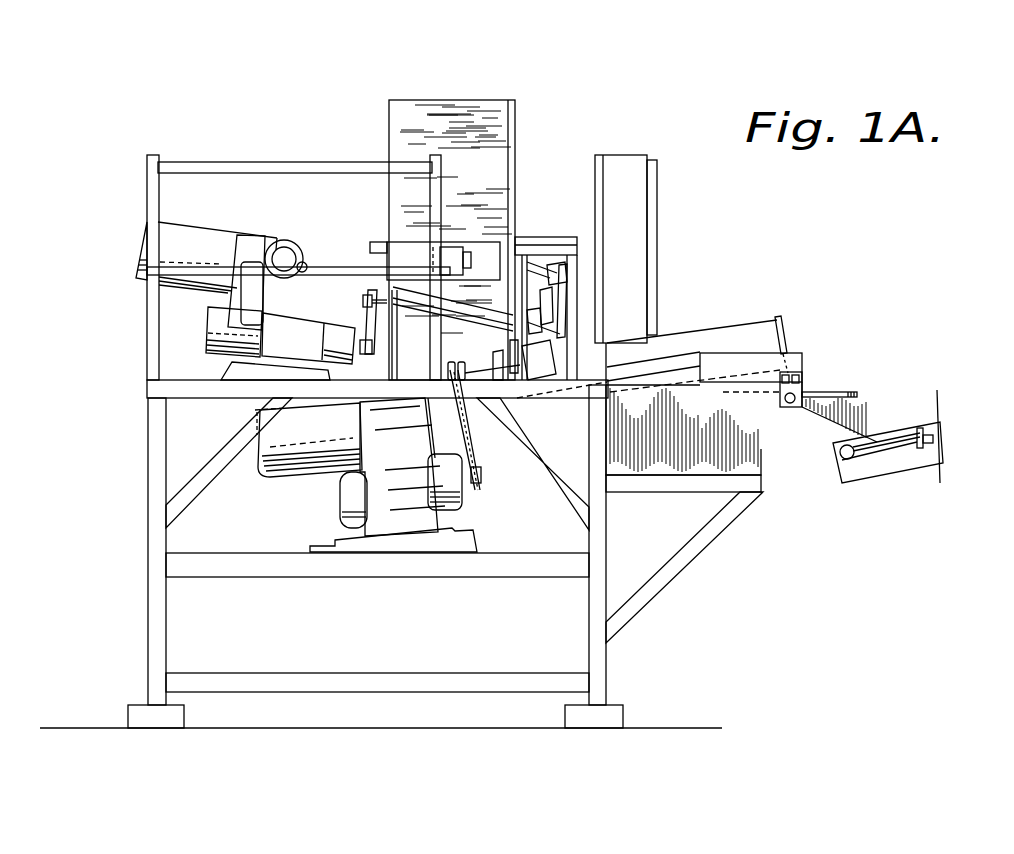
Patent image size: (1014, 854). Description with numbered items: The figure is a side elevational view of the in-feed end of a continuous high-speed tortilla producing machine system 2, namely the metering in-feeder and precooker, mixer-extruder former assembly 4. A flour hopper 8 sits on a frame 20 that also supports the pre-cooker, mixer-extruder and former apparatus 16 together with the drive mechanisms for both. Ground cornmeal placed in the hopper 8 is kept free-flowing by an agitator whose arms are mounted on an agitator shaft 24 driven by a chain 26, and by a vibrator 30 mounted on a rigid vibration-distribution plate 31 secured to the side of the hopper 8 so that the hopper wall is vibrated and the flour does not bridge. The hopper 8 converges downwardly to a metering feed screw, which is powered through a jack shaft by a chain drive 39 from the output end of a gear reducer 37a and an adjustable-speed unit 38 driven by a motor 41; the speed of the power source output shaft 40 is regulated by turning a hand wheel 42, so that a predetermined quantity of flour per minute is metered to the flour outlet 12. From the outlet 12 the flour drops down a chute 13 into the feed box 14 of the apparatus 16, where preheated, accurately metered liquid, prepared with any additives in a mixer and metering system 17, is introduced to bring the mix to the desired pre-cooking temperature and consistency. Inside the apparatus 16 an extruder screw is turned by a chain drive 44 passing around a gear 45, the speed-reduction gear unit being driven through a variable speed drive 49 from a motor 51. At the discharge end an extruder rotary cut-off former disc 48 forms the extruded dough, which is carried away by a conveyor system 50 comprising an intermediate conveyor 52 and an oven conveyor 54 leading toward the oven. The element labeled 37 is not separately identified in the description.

The tortilla machine system 2 is at (108, 72).
The metering in-feeder and precooker, mixer-extruder former assembly 4 is at (456, 628).
The flour hopper 8 is at (472, 103).
The flour outlet 12 is at (555, 318).
The chute 13 is at (527, 330).
The feed box 14 is at (540, 380).
The pre-cooker, mixer-extruder and former apparatus 16 is at (712, 340).
The mixer and metering system 17 is at (627, 200).
The frame 20 is at (600, 660).
The agitator shaft 24 is at (540, 265).
The chain 26 is at (566, 288).
The vibrator 30 is at (450, 255).
The rigid vibration-distribution plate 31 is at (478, 241).
The rod 37 is at (375, 288).
The gear reducer 37a is at (314, 325).
The adjustable-speed unit 38 is at (233, 296).
The chain drive 39 is at (363, 318).
The power source output shaft 40 is at (363, 357).
The motor 41 is at (215, 237).
The hand wheel 42 is at (292, 253).
The chain drive 44 is at (478, 438).
The gear 45 is at (477, 490).
The extruder rotary cut-off former disc 48 is at (838, 388).
The variable speed drive 49 is at (410, 459).
The conveyor system 50 is at (822, 453).
The motor 51 is at (305, 470).
The intermediate conveyor 52 is at (853, 425).
The oven conveyor 54 is at (898, 452).